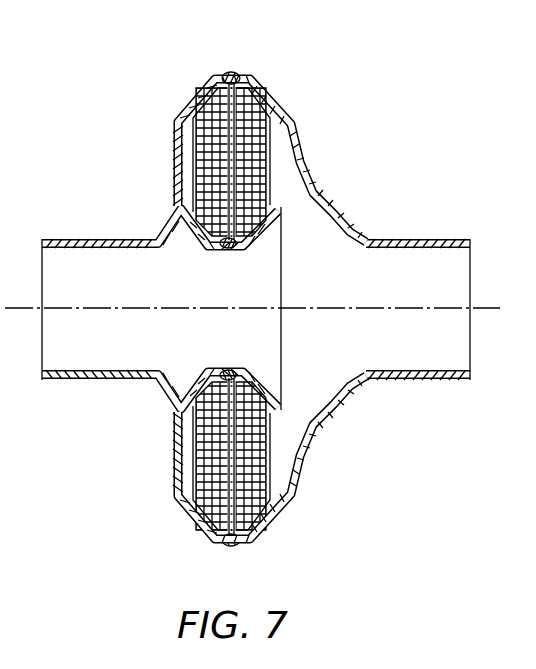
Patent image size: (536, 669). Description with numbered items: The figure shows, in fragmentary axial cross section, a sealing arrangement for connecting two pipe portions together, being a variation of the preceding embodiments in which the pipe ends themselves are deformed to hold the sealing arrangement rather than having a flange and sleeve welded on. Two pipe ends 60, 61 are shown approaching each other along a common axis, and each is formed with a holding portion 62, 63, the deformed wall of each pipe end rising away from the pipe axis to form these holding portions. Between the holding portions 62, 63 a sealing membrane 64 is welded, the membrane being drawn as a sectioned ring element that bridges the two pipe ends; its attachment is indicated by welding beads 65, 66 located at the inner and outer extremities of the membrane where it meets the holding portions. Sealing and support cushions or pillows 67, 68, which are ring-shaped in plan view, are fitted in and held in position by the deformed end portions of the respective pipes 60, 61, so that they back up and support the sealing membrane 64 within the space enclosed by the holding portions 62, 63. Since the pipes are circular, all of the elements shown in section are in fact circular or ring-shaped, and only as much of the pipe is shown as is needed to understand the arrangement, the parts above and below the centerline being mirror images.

The pipe end 60 is at (97, 238).
The pipe end 61 is at (410, 382).
The holding portion 62 is at (192, 100).
The holding portion 63 is at (247, 251).
The sealing membrane 64 is at (236, 138).
The welding bead 65 is at (229, 72).
The welding bead 66 is at (228, 248).
The sealing and support cushion 67 is at (213, 492).
The sealing and support cushion 68 is at (263, 513).